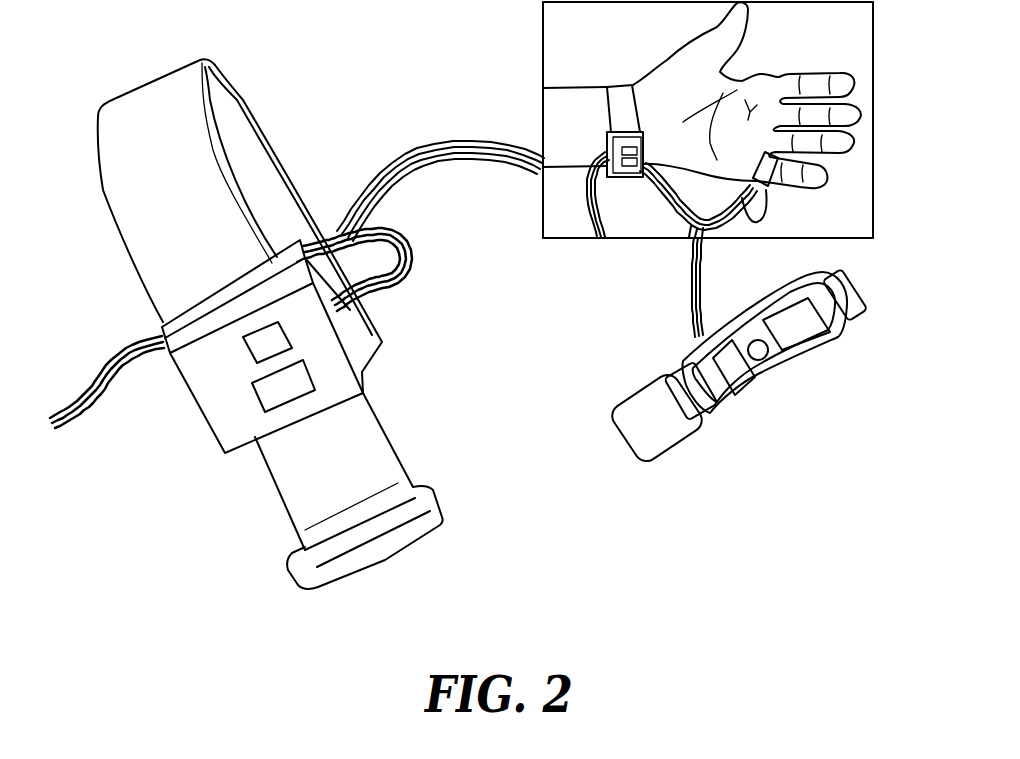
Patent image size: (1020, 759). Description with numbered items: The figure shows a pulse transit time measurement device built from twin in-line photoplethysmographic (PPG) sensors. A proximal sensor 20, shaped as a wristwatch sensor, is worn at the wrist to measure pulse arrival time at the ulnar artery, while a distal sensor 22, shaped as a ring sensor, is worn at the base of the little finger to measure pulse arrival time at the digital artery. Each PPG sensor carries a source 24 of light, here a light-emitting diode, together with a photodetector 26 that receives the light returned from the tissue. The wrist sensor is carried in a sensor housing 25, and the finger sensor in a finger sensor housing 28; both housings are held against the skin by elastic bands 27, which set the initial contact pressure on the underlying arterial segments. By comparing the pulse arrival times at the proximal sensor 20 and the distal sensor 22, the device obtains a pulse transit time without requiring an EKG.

The proximal sensor 20 is at (158, 75).
The distal sensor 22 is at (736, 286).
The source of light 24 is at (262, 339).
The sensor housing 25 is at (240, 455).
The photodetector 26 is at (262, 386).
The elastic bands 27 is at (305, 493).
The finger sensor housing 28 is at (787, 283).